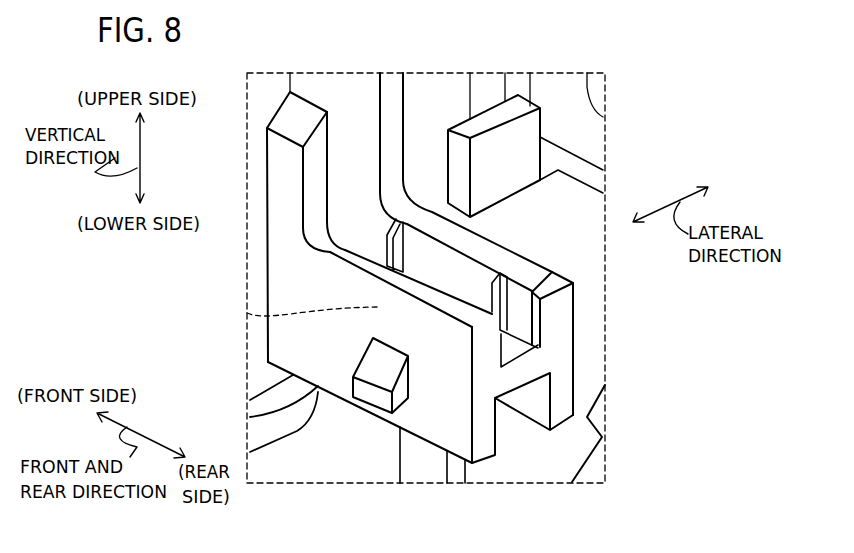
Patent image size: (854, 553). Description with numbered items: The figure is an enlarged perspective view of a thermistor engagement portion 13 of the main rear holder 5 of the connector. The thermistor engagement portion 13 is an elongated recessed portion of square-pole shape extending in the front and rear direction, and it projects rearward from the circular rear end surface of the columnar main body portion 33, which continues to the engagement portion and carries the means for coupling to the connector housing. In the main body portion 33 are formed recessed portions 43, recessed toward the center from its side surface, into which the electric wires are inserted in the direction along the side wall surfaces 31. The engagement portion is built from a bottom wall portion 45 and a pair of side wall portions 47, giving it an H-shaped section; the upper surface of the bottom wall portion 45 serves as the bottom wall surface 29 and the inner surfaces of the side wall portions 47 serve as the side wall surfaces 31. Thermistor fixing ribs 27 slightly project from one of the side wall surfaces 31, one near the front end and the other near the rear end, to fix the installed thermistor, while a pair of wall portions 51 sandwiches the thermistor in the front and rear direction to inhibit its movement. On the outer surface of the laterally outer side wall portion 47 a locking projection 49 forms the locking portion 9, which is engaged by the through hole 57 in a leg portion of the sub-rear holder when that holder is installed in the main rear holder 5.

The main rear holder 5 is at (345, 85).
The locking portion 9 is at (378, 422).
The thermistor engagement portion 13 is at (559, 365).
The thermistor fixing rib 27 is at (512, 275).
The bottom wall surface 29 is at (515, 335).
The side wall surface 31 is at (440, 272).
The main body portion 33 is at (271, 84).
The recessed portion 43 is at (365, 128).
The bottom wall portion 45 is at (532, 372).
The side wall portion 47 is at (583, 291).
The locking projection 49 is at (378, 367).
The wall portion 51 is at (283, 213).
The through hole 57 is at (488, 335).